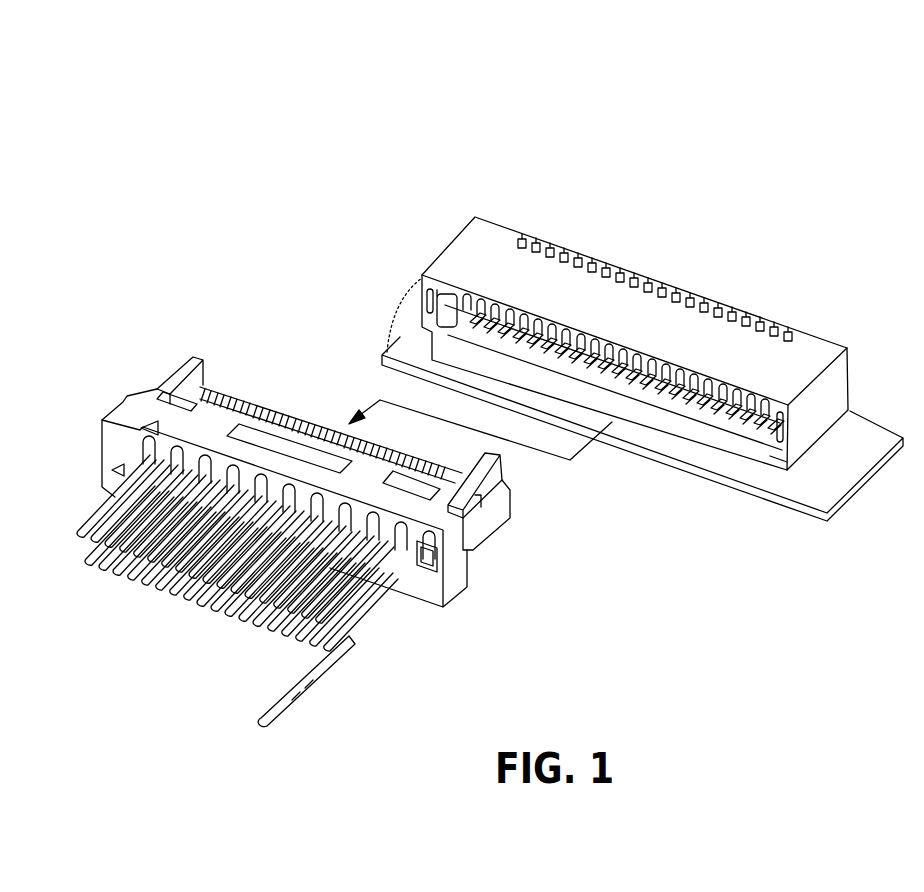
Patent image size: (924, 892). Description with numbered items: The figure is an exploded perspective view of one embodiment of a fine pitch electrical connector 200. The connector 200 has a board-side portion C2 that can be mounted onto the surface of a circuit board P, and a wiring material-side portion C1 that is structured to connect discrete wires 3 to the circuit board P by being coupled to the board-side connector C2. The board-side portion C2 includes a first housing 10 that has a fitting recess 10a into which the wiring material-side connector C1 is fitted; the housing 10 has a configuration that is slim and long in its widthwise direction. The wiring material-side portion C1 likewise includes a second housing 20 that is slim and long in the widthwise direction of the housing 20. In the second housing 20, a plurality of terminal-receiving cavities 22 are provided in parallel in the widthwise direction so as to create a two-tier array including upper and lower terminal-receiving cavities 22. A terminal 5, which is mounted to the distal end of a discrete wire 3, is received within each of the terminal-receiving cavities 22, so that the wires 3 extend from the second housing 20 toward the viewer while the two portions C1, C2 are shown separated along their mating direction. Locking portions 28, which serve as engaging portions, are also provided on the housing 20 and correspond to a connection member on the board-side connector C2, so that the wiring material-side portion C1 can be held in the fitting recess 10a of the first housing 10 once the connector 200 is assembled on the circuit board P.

The electrical connector 200 is at (474, 93).
The wiring material-side portion C1 is at (160, 388).
The board-side portion C2 is at (469, 217).
The first housing 10 is at (433, 270).
The fitting recess 10a is at (468, 358).
The second housing 20 is at (455, 588).
The terminal-receiving cavities 22 is at (143, 450).
The locking portions 28 is at (487, 490).
The terminal 5 is at (345, 661).
The discrete wire 3 is at (297, 694).
The circuit board P is at (858, 462).